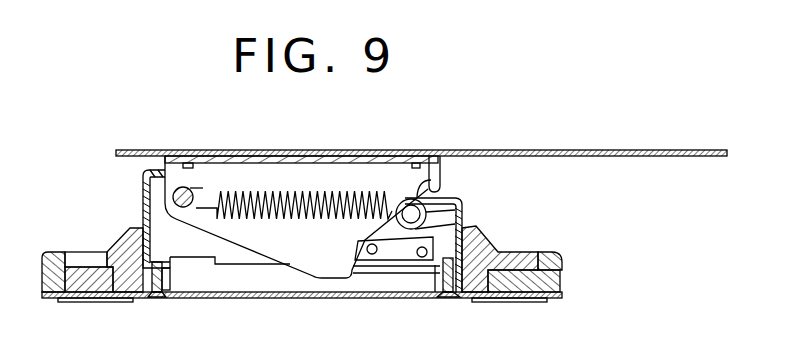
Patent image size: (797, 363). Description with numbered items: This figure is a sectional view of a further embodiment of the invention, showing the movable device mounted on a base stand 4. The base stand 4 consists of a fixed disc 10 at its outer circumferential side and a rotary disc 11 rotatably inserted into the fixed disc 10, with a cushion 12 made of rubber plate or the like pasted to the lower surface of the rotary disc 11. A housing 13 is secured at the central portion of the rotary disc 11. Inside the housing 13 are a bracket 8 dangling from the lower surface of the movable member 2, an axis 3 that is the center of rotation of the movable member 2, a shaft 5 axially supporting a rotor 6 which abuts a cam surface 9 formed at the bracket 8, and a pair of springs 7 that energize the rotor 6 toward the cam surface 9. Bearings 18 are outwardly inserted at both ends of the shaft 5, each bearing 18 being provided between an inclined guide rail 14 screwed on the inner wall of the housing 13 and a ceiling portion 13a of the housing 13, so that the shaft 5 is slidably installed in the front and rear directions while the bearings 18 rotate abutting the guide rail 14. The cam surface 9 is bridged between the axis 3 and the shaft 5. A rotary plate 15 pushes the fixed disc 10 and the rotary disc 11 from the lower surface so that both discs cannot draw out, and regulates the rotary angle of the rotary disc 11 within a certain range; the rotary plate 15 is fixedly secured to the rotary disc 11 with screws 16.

The movable member 2 is at (676, 159).
The axis 3 is at (181, 207).
The base stand 4 is at (533, 240).
The shaft 5 is at (404, 203).
The rotor 6 is at (455, 207).
The spring 7 is at (273, 215).
The bracket 8 is at (440, 174).
The cam surface 9 is at (310, 226).
The fixed disc 10 is at (562, 270).
The rotary disc 11 is at (539, 256).
The cushion 12 is at (508, 300).
The housing 13 is at (467, 172).
The ceiling portion 13a is at (430, 155).
The inclined guide rail 14 is at (388, 227).
The rotary plate 15 is at (240, 298).
The screw 16 is at (153, 297).
The bearing 18 is at (482, 244).